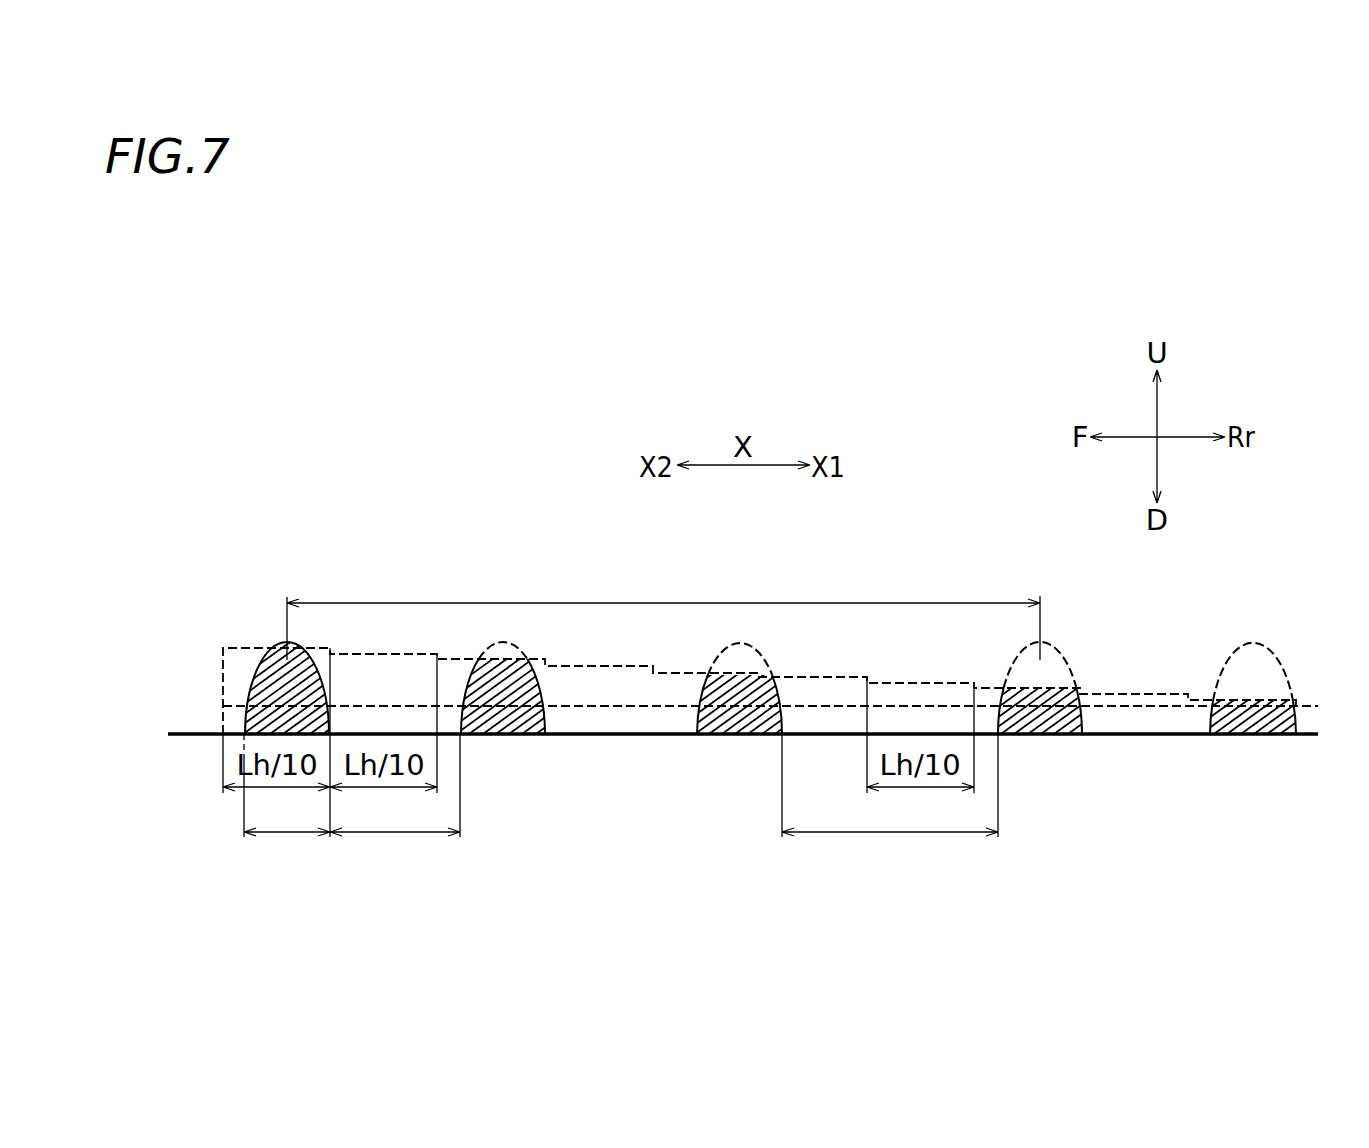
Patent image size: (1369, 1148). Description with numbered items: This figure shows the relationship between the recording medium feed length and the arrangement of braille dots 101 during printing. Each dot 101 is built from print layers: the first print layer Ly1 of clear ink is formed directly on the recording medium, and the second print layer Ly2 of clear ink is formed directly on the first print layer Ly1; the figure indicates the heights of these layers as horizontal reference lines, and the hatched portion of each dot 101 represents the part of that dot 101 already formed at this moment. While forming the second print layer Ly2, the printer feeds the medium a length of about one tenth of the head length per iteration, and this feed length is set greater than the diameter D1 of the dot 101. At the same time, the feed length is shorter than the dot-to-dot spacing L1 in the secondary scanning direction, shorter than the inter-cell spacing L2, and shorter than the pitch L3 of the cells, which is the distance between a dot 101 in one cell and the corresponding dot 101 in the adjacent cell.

The dot 101 is at (282, 640).
The first print layer Ly1 is at (223, 718).
The second print layer Ly2 is at (223, 675).
The diameter of the dot D1 is at (287, 742).
The dot-to-dot spacing L1 is at (395, 785).
The inter-cell spacing L2 is at (890, 785).
The pitch of the cells L3 is at (663, 614).